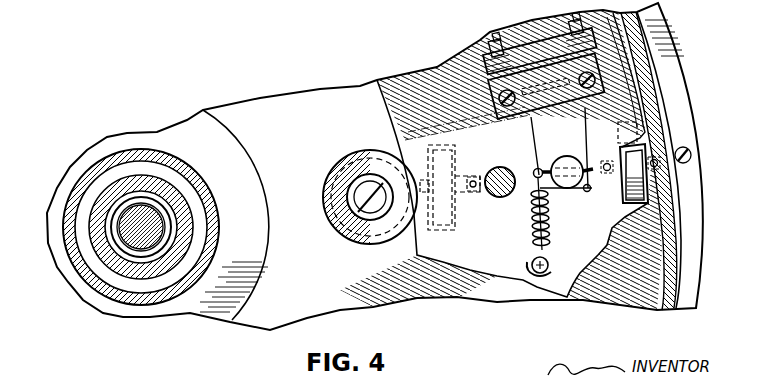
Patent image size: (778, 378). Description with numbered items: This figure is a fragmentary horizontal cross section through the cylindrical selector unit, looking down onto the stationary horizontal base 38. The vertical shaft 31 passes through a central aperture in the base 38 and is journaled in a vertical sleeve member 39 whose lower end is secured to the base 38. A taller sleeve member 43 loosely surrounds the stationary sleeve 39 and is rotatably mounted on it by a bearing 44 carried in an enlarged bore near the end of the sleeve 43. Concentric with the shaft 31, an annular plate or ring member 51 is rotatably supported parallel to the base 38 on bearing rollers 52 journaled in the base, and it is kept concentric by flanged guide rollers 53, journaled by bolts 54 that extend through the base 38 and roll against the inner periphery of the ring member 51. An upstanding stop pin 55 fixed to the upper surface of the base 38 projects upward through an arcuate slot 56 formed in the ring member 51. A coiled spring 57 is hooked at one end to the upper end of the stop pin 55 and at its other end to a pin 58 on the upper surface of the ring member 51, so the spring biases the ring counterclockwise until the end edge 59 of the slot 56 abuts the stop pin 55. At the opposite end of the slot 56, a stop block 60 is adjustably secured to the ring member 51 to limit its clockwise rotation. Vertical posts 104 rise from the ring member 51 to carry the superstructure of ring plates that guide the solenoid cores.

The vertical shaft 31 is at (158, 217).
The stationary horizontal base 38 is at (300, 136).
The vertical sleeve member 39 is at (173, 192).
The sleeve member 43 is at (130, 148).
The bearing 44 is at (175, 172).
The annular plate or ring member 51 is at (438, 68).
The bearing rollers 52 is at (460, 206).
The flanged guide rollers 53 is at (363, 152).
The bolts 54 is at (367, 212).
The stop pin 55 is at (565, 157).
The arcuate slot 56 is at (534, 153).
The coiled spring 57 is at (530, 227).
The pin 58 is at (552, 258).
The end edge 59 is at (587, 192).
The stop block 60 is at (484, 85).
The vertical posts 104 is at (490, 170).